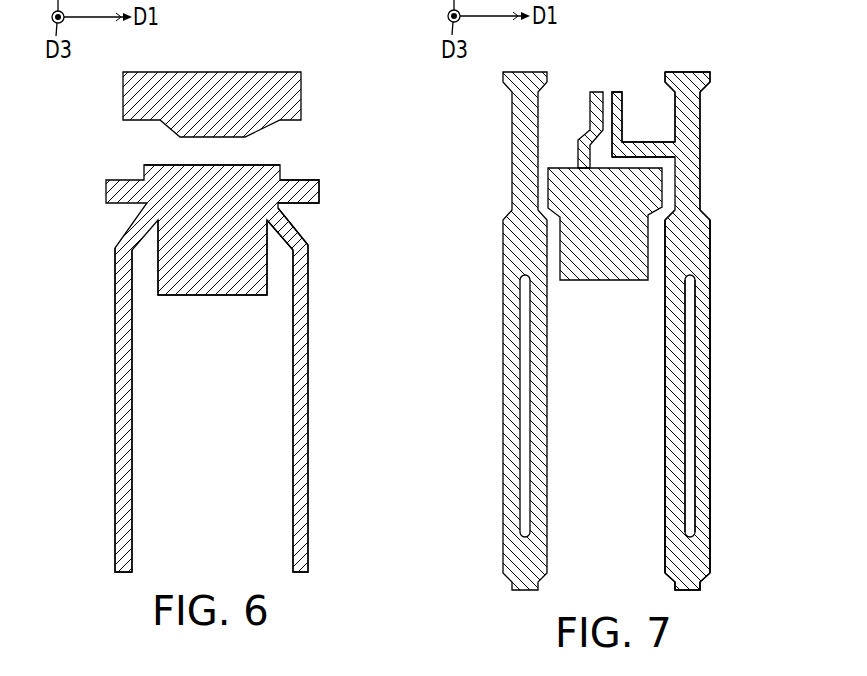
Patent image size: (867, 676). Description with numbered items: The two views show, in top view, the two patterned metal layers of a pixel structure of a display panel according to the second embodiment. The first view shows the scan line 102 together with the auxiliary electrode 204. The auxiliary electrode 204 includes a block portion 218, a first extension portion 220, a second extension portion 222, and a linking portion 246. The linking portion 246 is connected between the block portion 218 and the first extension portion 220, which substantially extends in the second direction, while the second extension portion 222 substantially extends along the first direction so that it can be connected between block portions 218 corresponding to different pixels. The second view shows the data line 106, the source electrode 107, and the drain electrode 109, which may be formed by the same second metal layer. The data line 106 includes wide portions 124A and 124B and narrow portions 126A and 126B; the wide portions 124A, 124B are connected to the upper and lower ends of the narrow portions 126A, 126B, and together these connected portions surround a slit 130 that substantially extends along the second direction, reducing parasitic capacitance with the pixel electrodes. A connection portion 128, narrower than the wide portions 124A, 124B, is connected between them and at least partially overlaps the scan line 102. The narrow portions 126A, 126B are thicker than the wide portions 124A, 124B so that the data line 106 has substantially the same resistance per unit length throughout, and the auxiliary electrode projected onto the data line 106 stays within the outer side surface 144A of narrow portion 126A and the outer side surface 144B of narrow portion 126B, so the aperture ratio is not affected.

In FIG. 6, the scan line 102 is at (123, 95).
In FIG. 6, the auxiliary electrode 204 is at (106, 190).
In FIG. 6, the block portion 218 is at (200, 183).
In FIG. 6, the first extension portion 220 is at (122, 408).
In FIG. 6, the second extension portion 222 is at (312, 192).
In FIG. 6, the linking portion 246 is at (291, 224).
In FIG. 7, the data line 106 is at (503, 277).
In FIG. 7, the source electrode 107 is at (616, 92).
In FIG. 7, the drain electrode 109 is at (595, 92).
In FIG. 7, the wide portion 124A is at (686, 236).
In FIG. 7, the wide portion 124B is at (703, 81).
In FIG. 7, the narrow portion 126A is at (672, 356).
In FIG. 7, the narrow portion 126B is at (703, 357).
In FIG. 7, the connection portion 128 is at (699, 146).
In FIG. 7, the slit 130 is at (688, 328).
In FIG. 7, the outer side surface 144A is at (665, 430).
In FIG. 7, the outer side surface 144B is at (710, 440).